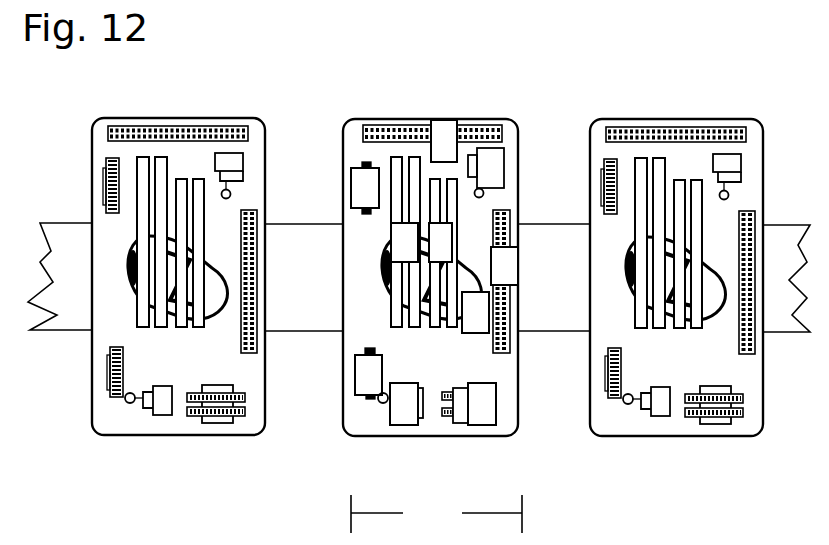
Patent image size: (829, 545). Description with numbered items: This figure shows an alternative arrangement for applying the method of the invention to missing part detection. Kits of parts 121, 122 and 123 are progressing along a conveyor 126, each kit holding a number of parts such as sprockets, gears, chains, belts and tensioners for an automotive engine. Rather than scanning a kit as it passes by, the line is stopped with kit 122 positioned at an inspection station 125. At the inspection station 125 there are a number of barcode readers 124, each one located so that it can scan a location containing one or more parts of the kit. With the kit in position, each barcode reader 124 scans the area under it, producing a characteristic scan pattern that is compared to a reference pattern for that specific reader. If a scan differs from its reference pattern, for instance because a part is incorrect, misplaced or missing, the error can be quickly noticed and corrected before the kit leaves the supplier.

The kit of parts 121 is at (222, 119).
The kit of parts 122 is at (419, 120).
The kit of parts 123 is at (657, 120).
The barcode reader 124 is at (440, 143).
The inspection station 125 is at (436, 514).
The conveyor 126 is at (73, 243).